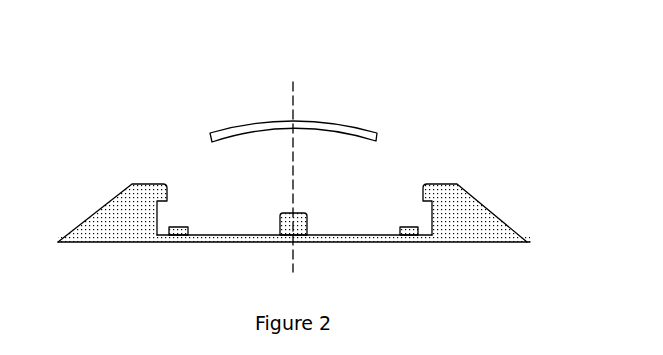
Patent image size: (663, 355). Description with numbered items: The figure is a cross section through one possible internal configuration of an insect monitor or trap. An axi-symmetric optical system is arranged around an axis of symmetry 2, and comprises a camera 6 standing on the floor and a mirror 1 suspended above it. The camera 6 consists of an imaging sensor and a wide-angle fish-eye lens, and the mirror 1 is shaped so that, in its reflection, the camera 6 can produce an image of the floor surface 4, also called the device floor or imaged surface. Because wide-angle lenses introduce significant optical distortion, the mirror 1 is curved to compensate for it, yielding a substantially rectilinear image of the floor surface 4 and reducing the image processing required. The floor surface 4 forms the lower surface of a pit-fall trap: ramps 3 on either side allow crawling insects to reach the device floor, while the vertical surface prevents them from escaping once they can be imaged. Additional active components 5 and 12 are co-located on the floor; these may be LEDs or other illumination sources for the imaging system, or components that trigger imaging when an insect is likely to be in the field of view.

The mirror 1 is at (355, 127).
The axis of symmetry 2 is at (290, 104).
The ramps 3 is at (475, 200).
The floor surface 4 is at (253, 237).
The active component 5 is at (183, 232).
The camera 6 is at (300, 228).
The active component 12 is at (413, 232).